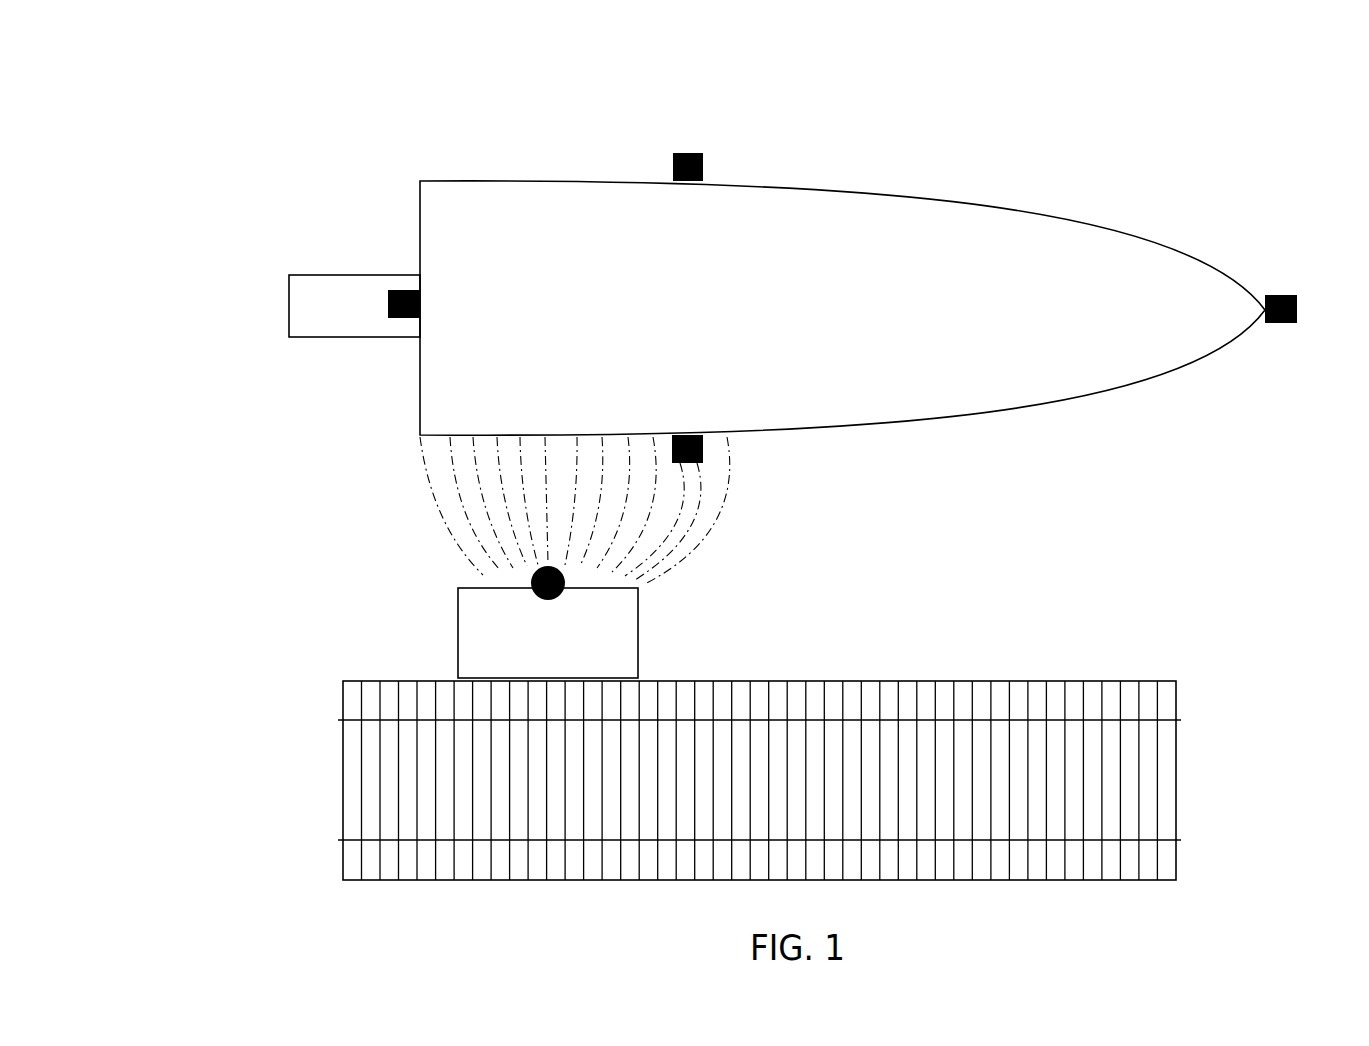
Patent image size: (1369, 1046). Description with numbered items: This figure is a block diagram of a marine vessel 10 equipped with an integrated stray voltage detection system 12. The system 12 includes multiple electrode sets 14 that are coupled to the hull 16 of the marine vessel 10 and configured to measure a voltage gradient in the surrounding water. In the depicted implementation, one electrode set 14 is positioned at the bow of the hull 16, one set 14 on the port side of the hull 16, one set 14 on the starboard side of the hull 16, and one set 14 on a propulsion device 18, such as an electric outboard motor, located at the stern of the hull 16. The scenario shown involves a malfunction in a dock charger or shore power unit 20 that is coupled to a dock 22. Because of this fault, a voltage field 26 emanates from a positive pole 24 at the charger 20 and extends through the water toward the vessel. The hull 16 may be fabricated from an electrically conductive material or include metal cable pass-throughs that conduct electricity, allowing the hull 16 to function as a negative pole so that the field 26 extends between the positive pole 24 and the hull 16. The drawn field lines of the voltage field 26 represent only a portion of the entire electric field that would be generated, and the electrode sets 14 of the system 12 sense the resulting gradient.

The marine vessel 10 is at (290, 132).
The stray voltage detection system 12 is at (1284, 382).
The electrode sets 14 is at (704, 164).
The hull 16 is at (916, 418).
The propulsion device 18 is at (335, 338).
The dock charger or shore power unit 20 is at (638, 645).
The dock 22 is at (1167, 755).
The positive pole 24 is at (532, 578).
The voltage field 26 is at (378, 487).